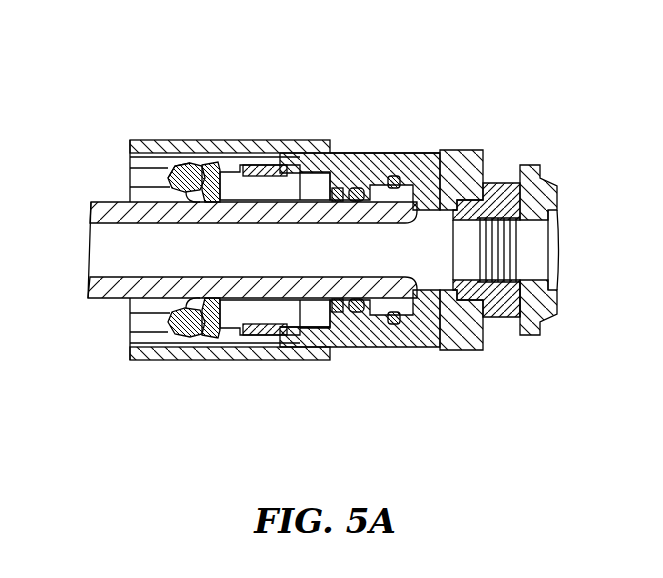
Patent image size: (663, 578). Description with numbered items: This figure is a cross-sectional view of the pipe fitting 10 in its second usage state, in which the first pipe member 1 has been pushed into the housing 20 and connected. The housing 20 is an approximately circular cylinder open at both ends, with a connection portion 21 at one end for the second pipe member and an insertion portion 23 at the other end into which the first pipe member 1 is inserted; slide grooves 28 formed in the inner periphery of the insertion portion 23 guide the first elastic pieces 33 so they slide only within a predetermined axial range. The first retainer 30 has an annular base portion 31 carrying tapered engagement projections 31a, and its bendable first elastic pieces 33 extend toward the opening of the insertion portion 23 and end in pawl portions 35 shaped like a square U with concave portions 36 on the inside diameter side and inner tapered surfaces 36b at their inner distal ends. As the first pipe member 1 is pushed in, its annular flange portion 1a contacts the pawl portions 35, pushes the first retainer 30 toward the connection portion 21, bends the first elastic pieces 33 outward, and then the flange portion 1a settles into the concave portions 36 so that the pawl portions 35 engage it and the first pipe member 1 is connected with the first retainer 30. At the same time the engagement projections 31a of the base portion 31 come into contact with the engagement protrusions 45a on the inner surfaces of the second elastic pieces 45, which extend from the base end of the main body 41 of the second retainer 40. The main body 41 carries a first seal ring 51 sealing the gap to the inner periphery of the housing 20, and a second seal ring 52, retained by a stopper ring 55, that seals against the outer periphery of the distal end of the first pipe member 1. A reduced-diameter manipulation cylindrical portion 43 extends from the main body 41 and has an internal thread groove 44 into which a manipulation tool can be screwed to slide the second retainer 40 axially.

The first pipe member 1 is at (103, 292).
The flange portion 1a is at (199, 194).
The pipe fitting 10 is at (338, 136).
The housing 20 is at (422, 140).
The connection portion 21 is at (543, 312).
The insertion portion 23 is at (130, 325).
The slide groove 28 is at (132, 157).
The first retainer 30 is at (183, 338).
The base portion 31 is at (333, 332).
The engagement projection 31a is at (287, 332).
The first elastic piece 33 is at (255, 166).
The pawl portion 35 is at (210, 180).
The concave portion 36 is at (210, 178).
The inner tapered surface 36b is at (180, 175).
The second retainer 40 is at (453, 165).
The main body 41 is at (436, 318).
The manipulation cylindrical portion 43 is at (500, 292).
The thread groove 44 is at (498, 218).
The second elastic piece 45 is at (268, 172).
The engagement protrusion 45a is at (300, 185).
The first seal ring 51 is at (395, 176).
The second seal ring 52 is at (356, 153).
The stopper ring 55 is at (360, 332).